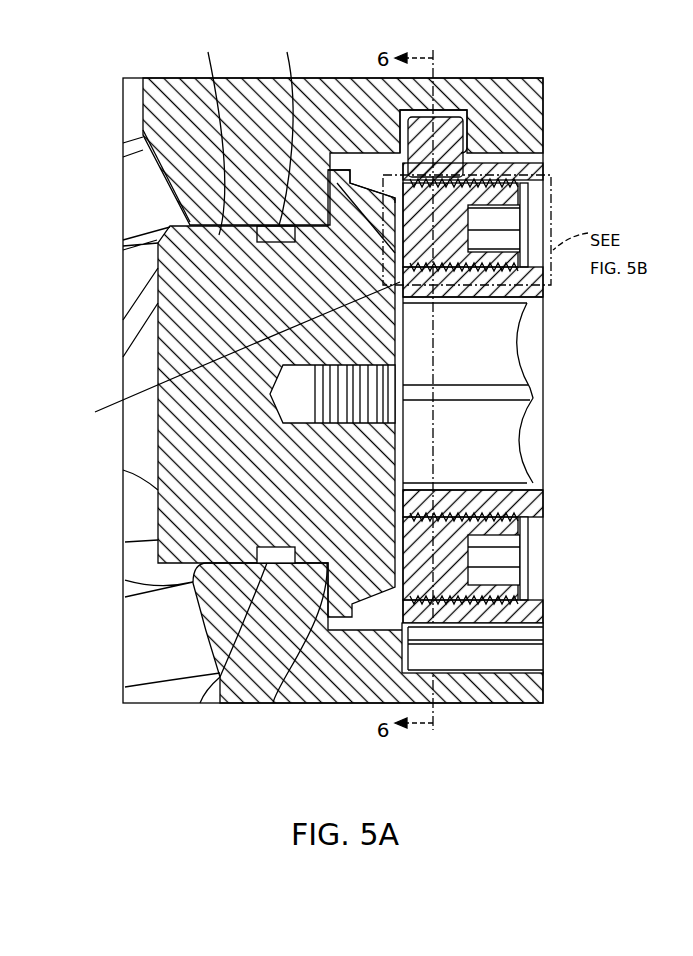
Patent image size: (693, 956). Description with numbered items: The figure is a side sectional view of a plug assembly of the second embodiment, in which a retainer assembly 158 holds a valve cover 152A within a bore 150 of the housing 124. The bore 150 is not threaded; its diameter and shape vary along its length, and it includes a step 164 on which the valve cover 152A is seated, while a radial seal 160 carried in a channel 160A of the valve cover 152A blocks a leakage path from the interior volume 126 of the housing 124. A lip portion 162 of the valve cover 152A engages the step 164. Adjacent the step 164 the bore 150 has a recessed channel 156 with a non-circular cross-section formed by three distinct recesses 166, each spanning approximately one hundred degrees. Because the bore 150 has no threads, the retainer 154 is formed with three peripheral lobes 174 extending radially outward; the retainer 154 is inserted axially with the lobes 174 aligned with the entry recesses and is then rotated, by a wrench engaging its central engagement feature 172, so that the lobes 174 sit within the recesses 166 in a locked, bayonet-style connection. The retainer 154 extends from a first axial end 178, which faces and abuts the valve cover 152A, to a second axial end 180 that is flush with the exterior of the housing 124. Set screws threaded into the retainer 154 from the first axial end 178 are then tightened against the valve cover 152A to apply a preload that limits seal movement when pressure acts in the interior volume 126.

The housing 124 is at (340, 693).
The interior volume 126 is at (135, 655).
The bore 150 is at (187, 222).
The valve cover 152A is at (177, 497).
The retainer 154 is at (537, 522).
The recessed channel 156 is at (442, 108).
The retainer assembly 158 is at (612, 589).
The radial seal 160 is at (210, 133).
The channel 160A is at (200, 703).
The lip portion 162 is at (279, 137).
The step 164 is at (273, 703).
The recess 166 is at (412, 110).
The central engagement feature 172 is at (533, 427).
The peripheral lobe 174 is at (470, 127).
The first axial end 178 is at (228, 352).
The second axial end 180 is at (545, 653).